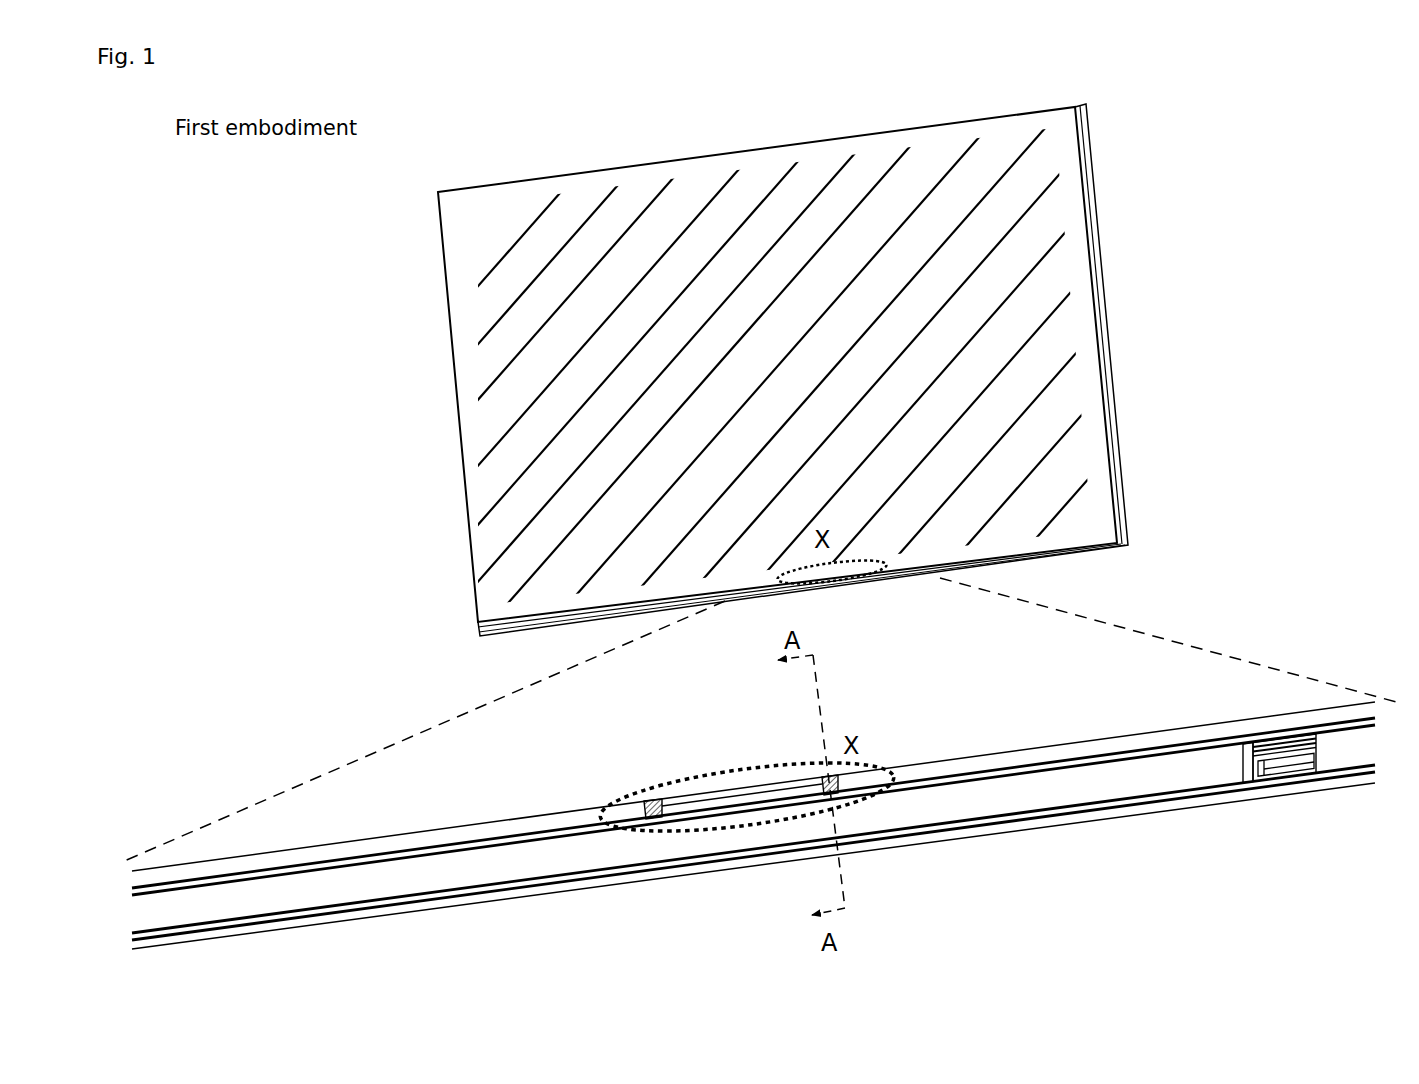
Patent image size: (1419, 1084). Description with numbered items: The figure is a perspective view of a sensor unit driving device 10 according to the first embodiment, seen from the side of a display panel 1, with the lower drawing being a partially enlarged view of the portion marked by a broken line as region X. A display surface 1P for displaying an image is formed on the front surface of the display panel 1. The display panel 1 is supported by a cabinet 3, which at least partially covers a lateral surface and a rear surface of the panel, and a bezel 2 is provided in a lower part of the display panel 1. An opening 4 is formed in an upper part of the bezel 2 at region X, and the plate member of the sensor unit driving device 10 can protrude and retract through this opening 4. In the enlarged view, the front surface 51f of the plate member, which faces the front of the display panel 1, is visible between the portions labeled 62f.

The display panel 1 is at (513, 178).
The display surface 1P is at (460, 240).
The bezel 2 is at (505, 626).
The cabinet 3 is at (1118, 496).
The opening 4 is at (733, 838).
The sensor unit driving device 10 is at (920, 740).
The front surface 51f is at (745, 797).
The fixing members 62f is at (645, 803).